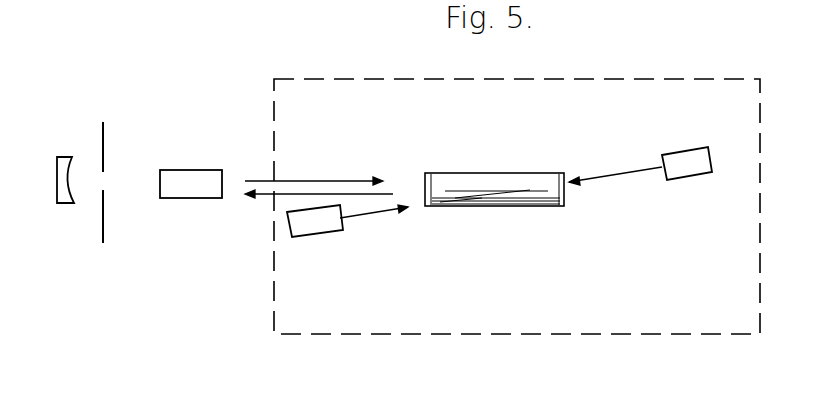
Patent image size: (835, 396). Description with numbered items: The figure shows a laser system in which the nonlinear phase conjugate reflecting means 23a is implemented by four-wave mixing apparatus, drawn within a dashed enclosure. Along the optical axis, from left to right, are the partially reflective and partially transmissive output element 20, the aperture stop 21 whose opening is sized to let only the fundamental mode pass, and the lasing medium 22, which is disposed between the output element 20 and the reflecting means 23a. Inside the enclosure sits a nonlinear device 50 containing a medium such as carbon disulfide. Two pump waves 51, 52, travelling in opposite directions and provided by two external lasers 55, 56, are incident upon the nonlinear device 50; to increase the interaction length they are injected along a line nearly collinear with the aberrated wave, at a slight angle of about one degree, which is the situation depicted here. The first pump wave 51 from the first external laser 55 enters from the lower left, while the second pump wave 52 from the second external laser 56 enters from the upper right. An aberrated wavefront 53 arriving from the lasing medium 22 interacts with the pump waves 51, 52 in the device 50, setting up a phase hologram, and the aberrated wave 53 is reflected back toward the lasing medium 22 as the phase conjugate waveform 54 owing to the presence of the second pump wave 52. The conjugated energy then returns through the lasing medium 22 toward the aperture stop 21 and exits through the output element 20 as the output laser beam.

The output element 20 is at (57, 157).
The aperture stop 21 is at (102, 134).
The lasing medium 22 is at (228, 161).
The nonlinear phase conjugate reflecting means 23a is at (328, 328).
The nonlinear device 50 is at (561, 206).
The first pump wave 51 is at (385, 212).
The second pump wave 52 is at (597, 176).
The aberrated wave 53 is at (338, 180).
The phase conjugate waveform 54 is at (288, 195).
The first external laser 55 is at (342, 230).
The second external laser 56 is at (712, 172).